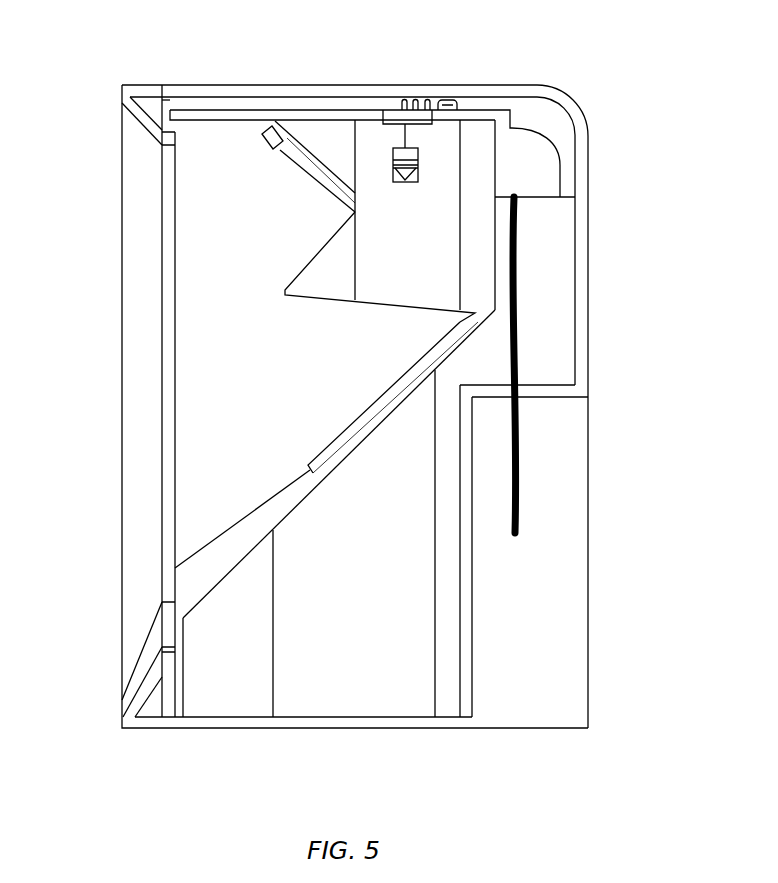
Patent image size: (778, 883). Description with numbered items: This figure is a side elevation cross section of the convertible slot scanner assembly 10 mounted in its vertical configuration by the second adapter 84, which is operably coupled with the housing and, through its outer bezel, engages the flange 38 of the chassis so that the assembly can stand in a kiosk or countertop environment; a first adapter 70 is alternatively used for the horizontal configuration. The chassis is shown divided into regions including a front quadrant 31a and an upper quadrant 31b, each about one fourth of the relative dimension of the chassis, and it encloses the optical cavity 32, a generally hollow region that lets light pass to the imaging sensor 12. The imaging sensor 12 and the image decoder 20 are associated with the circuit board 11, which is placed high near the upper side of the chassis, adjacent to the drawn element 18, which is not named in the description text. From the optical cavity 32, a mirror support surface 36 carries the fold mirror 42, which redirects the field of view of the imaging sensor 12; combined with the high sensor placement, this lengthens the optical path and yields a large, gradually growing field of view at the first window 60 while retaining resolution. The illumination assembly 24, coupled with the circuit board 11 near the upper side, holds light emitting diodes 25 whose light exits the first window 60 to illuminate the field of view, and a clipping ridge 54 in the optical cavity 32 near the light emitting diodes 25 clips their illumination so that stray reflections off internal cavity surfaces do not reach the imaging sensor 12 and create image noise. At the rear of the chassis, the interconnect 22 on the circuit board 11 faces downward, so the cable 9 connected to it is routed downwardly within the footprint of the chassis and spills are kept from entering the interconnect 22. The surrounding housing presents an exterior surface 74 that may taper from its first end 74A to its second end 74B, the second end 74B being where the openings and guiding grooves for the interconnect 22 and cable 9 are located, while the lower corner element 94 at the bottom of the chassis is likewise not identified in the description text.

The cable 9 is at (519, 492).
The convertible slot scanner assembly 10 is at (612, 742).
The circuit board 11 is at (437, 110).
The imaging sensor 12 is at (400, 122).
The top wall 18 is at (353, 106).
The image decoder 20 is at (313, 116).
The interconnect 22 is at (495, 160).
The illumination assembly 24 is at (260, 96).
The light emitting diodes 25 is at (266, 148).
The front quadrant 31a is at (230, 75).
The upper quadrant 31b is at (648, 83).
The optical cavity 32 is at (305, 383).
The mirror support surface 36 is at (403, 400).
The flange 38 is at (168, 707).
The fold mirror 42 is at (450, 328).
The clipping ridge 54 is at (285, 290).
The first window 60 is at (167, 293).
The first adapter 70 is at (577, 118).
The exterior surface 74 is at (589, 228).
The first end 74A is at (223, 745).
The second end 74B is at (637, 283).
The second adapter 84 is at (140, 238).
The corner bracket 94 is at (132, 723).